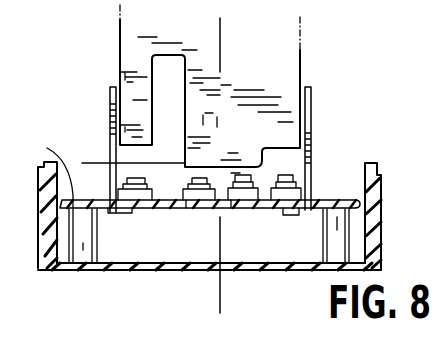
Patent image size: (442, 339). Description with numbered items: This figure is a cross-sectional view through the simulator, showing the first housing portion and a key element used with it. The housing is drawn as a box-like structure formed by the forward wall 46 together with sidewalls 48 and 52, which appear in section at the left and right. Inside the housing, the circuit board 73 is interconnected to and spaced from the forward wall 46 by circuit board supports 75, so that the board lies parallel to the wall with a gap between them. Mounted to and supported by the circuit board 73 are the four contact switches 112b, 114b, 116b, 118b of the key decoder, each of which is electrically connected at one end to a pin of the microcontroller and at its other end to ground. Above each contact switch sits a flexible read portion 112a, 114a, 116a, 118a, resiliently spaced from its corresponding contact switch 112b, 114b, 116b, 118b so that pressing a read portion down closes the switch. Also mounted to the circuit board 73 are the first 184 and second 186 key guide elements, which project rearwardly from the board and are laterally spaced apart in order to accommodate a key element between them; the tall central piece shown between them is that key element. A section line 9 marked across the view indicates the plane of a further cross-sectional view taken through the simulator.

The section line 9- 9 is at (212, 33).
The forward wall 46 is at (67, 273).
The sidewall 48 is at (42, 232).
The sidewall 52 is at (368, 222).
The circuit board 73 is at (44, 195).
The circuit board supports 75 is at (103, 268).
The flexible read portion 112a is at (108, 165).
The contact switch 112b is at (124, 213).
The flexible read portion 114a is at (198, 177).
The contact switch 114b is at (201, 198).
The flexible read portion 116a is at (258, 176).
The contact switch 116b is at (247, 197).
The flexible read portion 118a is at (296, 177).
The contact switch 118b is at (289, 204).
The first key guide element 184 is at (108, 105).
The second key guide element 186 is at (311, 100).